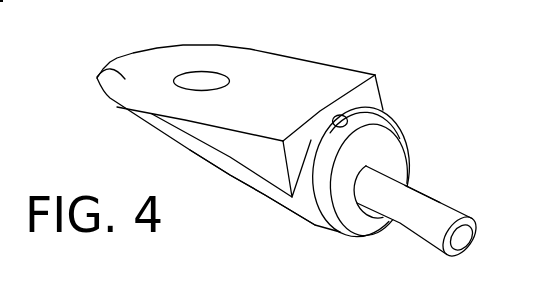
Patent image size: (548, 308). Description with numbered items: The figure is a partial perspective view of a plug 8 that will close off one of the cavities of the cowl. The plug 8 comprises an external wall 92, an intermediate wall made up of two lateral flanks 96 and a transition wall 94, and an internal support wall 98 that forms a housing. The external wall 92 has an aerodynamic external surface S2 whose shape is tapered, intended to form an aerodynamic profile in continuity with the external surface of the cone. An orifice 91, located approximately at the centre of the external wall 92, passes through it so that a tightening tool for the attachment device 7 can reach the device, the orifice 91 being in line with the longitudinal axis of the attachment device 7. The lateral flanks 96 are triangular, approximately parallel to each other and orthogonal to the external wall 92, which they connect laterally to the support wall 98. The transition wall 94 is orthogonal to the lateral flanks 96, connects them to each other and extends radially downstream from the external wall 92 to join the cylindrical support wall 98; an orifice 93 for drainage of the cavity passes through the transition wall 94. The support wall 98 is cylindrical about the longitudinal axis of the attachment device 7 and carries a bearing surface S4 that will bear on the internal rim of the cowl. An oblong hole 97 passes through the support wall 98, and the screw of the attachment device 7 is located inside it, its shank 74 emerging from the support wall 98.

The attachment device 7 is at (428, 226).
The plug 8 is at (396, 126).
The shank 74 is at (412, 219).
The orifice 91 is at (207, 78).
The external wall 92 is at (95, 78).
The orifice 93 is at (338, 114).
The transition wall 94 is at (386, 97).
The lateral flanks 96 is at (247, 152).
The oblong hole 97 is at (369, 219).
The support wall 98 is at (306, 221).
The external surface S2 is at (276, 70).
The bearing surface S4 is at (392, 162).